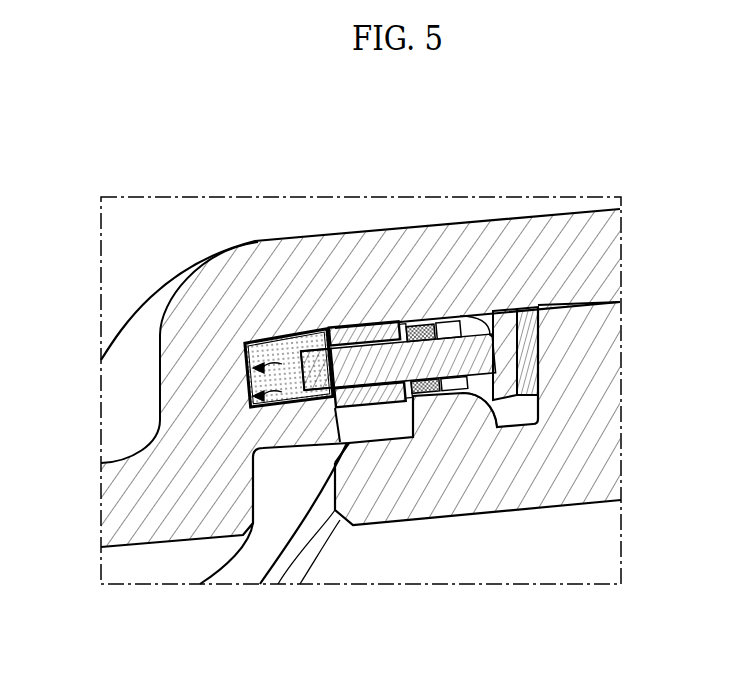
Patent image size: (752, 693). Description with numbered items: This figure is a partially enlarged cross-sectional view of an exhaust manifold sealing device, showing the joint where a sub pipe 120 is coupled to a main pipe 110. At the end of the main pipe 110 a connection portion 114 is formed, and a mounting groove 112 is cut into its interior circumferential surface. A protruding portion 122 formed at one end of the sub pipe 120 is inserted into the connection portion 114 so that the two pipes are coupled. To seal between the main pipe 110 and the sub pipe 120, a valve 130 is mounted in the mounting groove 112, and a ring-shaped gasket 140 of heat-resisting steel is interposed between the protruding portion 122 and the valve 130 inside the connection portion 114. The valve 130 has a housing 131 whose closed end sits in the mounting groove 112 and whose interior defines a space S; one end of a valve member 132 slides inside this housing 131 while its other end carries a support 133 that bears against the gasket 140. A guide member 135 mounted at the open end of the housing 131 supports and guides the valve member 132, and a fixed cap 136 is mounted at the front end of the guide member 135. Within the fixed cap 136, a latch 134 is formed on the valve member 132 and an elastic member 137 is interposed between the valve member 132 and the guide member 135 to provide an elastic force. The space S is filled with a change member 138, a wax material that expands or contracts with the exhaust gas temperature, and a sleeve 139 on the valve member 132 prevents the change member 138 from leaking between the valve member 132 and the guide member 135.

The main pipe 110 is at (110, 504).
The mounting groove 112 is at (250, 386).
The connection portion 114 is at (610, 273).
The sub pipe 120 is at (470, 507).
The protruding portion 122 is at (608, 392).
The valve 130 is at (402, 404).
The housing 131 is at (272, 340).
The valve member 132 is at (378, 365).
The support 133 is at (503, 323).
The latch 134 is at (440, 330).
The guide member 135 is at (350, 325).
The fixed cap 136 is at (455, 312).
The elastic member 137 is at (423, 327).
The change member 138 is at (290, 398).
The sleeve 139 is at (308, 332).
The gasket 140 is at (527, 332).
The space S is at (250, 353).